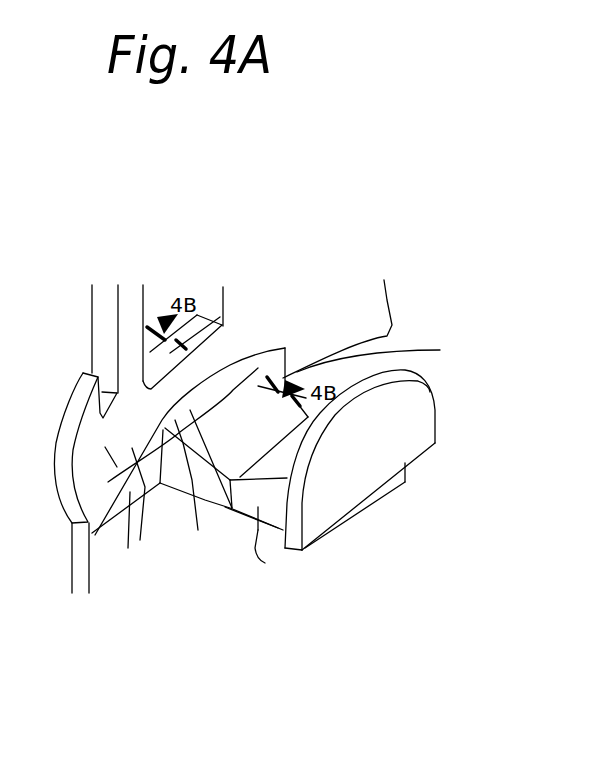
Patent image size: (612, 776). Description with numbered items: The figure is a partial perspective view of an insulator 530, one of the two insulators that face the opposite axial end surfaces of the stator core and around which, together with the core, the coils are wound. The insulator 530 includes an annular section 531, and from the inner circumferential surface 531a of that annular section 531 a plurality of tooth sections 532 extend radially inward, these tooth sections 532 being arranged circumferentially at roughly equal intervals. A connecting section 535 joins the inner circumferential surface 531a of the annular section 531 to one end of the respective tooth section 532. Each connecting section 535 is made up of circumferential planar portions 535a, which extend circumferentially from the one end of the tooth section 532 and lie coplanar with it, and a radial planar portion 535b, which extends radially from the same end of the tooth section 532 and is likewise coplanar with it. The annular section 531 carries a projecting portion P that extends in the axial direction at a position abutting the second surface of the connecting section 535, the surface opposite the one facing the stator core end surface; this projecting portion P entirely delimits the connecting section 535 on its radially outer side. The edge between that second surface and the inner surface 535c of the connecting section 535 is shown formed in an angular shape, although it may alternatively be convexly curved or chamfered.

The projecting portion P is at (213, 361).
The insulator 530 is at (250, 280).
The annular section 531 is at (116, 483).
The inner circumferential surface 531a is at (322, 296).
The tooth section 532 is at (265, 563).
The connecting section 535 is at (198, 530).
The circumferential planar portion 535a is at (440, 350).
The radial planar portion 535b is at (240, 567).
The inner surface 535c is at (140, 540).